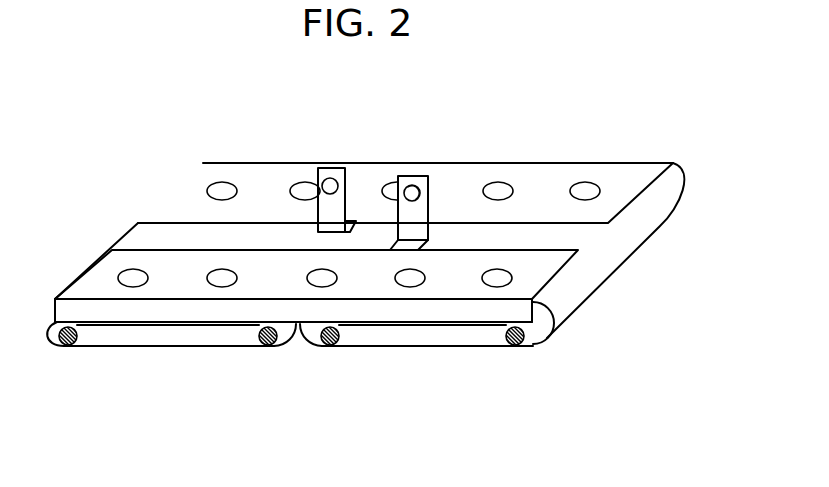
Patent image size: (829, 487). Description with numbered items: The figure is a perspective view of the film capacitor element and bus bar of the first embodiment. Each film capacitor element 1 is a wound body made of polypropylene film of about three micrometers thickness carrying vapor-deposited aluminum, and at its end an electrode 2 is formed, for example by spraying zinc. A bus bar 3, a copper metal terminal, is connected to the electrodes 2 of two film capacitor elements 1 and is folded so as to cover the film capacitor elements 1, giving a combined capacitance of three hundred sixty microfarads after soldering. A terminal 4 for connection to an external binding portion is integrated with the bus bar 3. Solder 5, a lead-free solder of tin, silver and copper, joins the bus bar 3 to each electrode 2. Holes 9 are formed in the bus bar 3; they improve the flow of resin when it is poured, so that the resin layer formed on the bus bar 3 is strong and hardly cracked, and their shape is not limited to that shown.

The film capacitor element 1 is at (134, 238).
The electrode 2 is at (171, 337).
The bus bar 3 is at (530, 280).
The terminal 4 is at (338, 167).
The solder 5 is at (516, 344).
The holes 9 is at (586, 188).